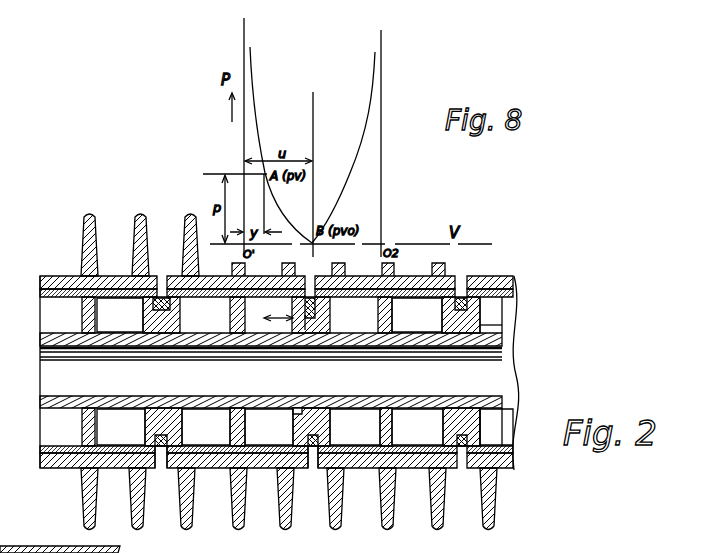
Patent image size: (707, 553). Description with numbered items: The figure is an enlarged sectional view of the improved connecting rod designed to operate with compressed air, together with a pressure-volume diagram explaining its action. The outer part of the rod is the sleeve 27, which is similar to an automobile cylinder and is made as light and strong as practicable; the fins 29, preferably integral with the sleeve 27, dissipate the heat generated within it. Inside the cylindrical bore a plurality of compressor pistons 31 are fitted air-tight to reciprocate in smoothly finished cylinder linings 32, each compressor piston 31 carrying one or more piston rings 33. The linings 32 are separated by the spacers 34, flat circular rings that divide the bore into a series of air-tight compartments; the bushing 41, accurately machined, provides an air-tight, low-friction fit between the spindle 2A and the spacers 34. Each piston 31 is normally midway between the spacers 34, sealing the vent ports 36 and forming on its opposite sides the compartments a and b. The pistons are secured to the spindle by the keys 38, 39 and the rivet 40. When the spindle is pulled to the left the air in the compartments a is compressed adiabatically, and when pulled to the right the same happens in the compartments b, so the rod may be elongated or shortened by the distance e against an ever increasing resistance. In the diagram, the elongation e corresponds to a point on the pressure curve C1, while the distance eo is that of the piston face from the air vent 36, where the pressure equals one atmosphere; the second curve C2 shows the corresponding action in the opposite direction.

In FIG. 2, the inner cylinder 2A is at (50, 337).
In FIG. 2, the sleeve 27 is at (502, 275).
In FIG. 2, the fins 29 is at (487, 522).
In FIG. 2, the compressor piston 31 is at (180, 322).
In FIG. 2, the cylinder lining 32 is at (208, 470).
In FIG. 2, the piston ring 33 is at (162, 470).
In FIG. 2, the spacer 34 is at (96, 317).
In FIG. 2, the vent port 36 is at (162, 283).
In FIG. 2, the key 38 is at (470, 403).
In FIG. 2, the key 39 is at (478, 330).
In FIG. 2, the rivet 40 is at (500, 332).
In FIG. 2, the bushing 41 is at (80, 413).
In FIG. 2, the compartment a is at (270, 427).
In FIG. 2, the compartment b is at (347, 427).
In FIG. 2, the elongation distance e is at (278, 312).
In FIG. 2, the distance from piston face to air vent eo is at (305, 333).
In FIG. 8, the pressure curve C1 is at (281, 145).
In FIG. 8, the curve C2 is at (343, 147).